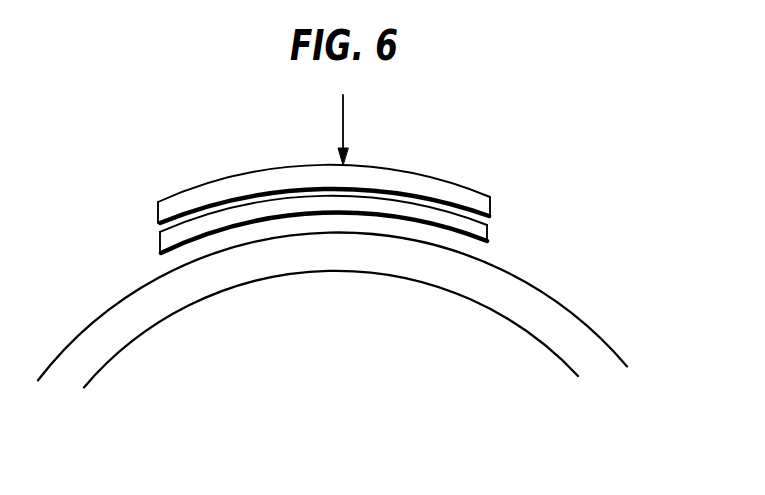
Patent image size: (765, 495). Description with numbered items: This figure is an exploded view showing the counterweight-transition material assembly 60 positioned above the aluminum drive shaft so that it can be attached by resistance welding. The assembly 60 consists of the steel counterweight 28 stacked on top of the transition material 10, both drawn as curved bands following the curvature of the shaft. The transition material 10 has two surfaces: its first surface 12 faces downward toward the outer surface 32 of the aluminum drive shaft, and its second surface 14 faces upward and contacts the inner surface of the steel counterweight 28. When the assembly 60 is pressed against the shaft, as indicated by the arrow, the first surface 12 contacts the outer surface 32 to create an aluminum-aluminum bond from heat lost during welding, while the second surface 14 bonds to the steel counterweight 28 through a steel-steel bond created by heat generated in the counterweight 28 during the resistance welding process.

The counterweight-transition material assembly 60 is at (162, 186).
The steel counterweight 28 is at (490, 207).
The second surface of the transition material 14 is at (159, 228).
The transition material 10 is at (489, 233).
The first surface of the transition material 12 is at (171, 252).
The outer surface of the aluminum drive shaft 32 is at (600, 337).